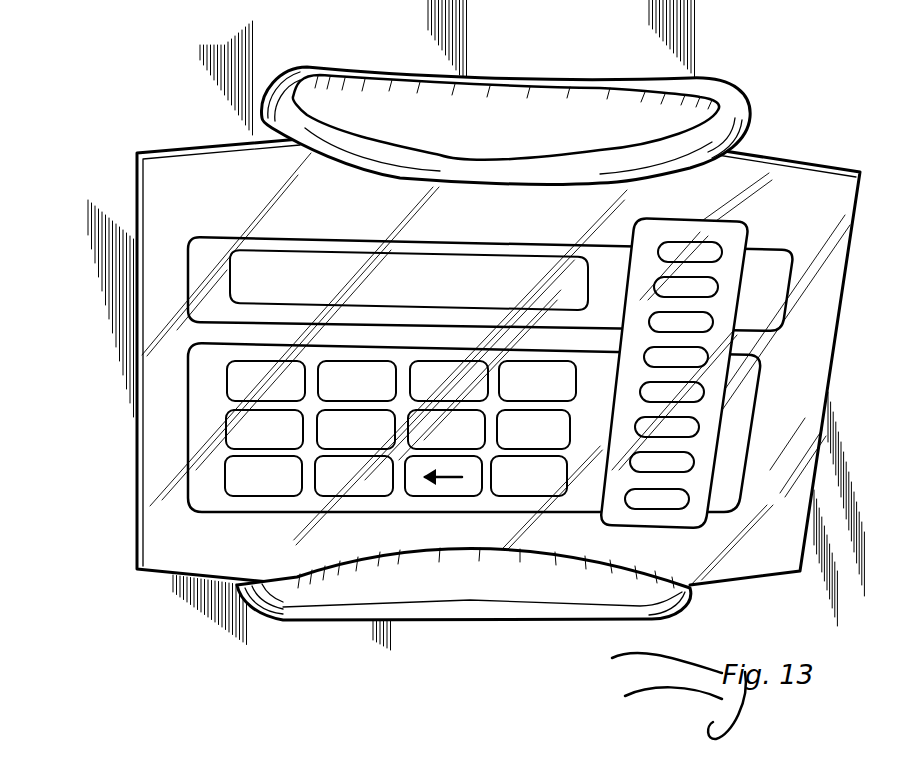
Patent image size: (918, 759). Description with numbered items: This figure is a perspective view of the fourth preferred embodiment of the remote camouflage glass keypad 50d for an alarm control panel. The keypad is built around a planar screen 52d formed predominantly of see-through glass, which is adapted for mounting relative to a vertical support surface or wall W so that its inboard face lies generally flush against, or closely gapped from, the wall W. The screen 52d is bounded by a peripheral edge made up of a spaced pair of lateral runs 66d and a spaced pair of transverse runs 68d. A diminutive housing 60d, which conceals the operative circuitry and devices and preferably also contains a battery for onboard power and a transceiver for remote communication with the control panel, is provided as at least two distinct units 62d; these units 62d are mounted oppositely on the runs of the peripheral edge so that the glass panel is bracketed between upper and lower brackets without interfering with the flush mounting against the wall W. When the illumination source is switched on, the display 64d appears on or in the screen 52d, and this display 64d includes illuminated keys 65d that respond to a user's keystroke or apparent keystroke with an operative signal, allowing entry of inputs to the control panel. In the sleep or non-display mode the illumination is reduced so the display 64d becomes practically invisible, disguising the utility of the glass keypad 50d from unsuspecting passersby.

The wall W is at (210, 58).
The glass keypad 50d is at (444, 371).
The planar screen 52d is at (444, 362).
The display 64d is at (213, 234).
The illuminated keys 65d is at (228, 470).
The lateral runs 66d is at (110, 284).
The transverse runs 68d is at (780, 150).
The housing 60d is at (493, 371).
The distinct units 62d is at (439, 590).